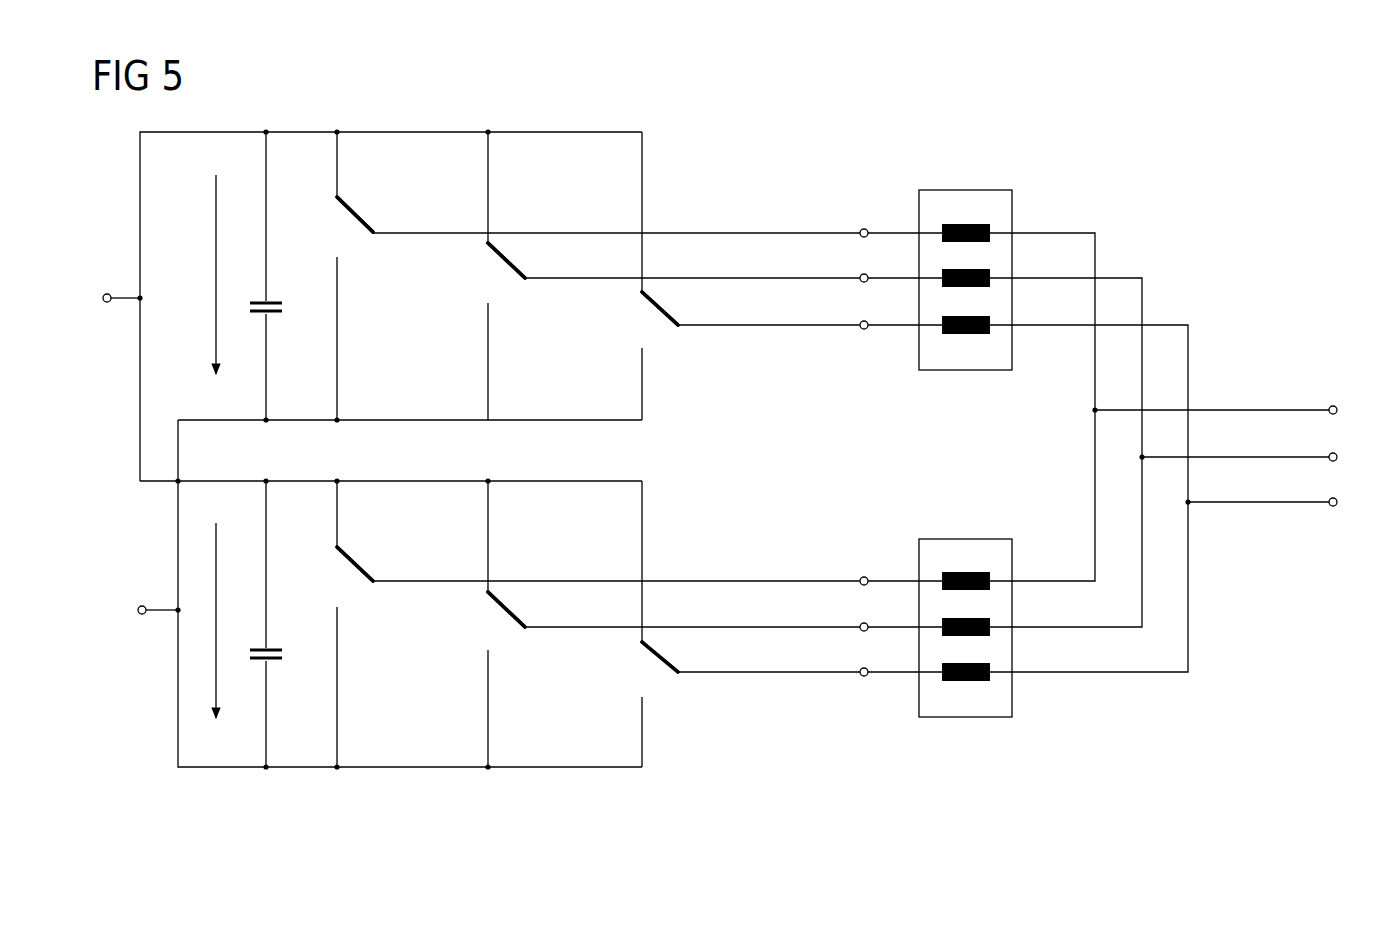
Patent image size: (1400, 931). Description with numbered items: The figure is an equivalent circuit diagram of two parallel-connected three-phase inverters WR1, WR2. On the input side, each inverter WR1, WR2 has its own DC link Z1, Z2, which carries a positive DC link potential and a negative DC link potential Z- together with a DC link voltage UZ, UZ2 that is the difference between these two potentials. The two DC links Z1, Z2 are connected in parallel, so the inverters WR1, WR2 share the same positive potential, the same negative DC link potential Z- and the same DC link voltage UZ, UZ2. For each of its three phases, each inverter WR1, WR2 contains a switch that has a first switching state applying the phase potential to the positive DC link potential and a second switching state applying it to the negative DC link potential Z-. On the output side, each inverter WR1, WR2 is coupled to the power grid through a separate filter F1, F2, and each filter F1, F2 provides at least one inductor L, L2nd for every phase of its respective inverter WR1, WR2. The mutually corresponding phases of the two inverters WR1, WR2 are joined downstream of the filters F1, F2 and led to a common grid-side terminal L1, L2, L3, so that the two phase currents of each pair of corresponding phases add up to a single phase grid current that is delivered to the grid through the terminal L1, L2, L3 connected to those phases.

The DC link Z1 is at (293, 119).
The DC link Z2 is at (293, 782).
The inverter WR1 is at (403, 119).
The inverter WR2 is at (404, 782).
The DC link voltage UZ is at (232, 274).
The DC link voltage UZ2 is at (232, 620).
The negative DC link potential Z- is at (142, 612).
The filter F1 is at (1012, 207).
The filter F2 is at (1012, 700).
The inductor L is at (965, 226).
The inductor L2nd is at (964, 683).
The grid-side terminal L1 is at (1231, 413).
The grid-side terminal L2 is at (1254, 460).
The grid-side terminal L3 is at (1277, 505).